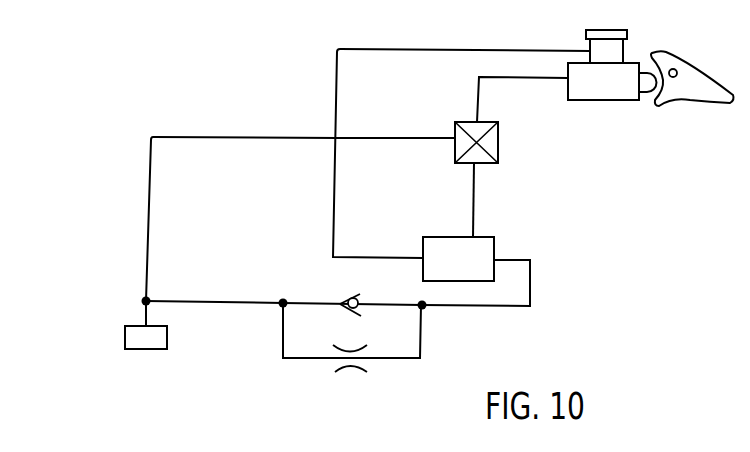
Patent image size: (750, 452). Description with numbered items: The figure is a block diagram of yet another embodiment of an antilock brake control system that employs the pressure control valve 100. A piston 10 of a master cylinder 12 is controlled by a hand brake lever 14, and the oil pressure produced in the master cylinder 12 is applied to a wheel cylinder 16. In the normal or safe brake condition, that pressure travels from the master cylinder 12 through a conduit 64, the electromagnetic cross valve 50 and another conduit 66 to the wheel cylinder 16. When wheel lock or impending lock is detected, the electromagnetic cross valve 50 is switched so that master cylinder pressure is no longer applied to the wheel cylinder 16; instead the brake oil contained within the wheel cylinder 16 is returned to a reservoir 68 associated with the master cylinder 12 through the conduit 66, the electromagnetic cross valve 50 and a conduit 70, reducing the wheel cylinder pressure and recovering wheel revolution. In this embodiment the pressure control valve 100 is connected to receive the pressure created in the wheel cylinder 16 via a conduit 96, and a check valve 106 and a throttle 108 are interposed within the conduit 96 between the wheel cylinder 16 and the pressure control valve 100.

The piston 10 is at (643, 85).
The master cylinder 12 is at (605, 95).
The hand brake lever 14 is at (697, 90).
The wheel cylinder 16 is at (133, 333).
The electromagnetic cross valve 50 is at (500, 147).
The conduit 64 is at (525, 80).
The conduit 66 is at (207, 135).
The reservoir 68 is at (610, 56).
The conduit 70 is at (335, 90).
The conduit 96 is at (227, 305).
The pressure control valve 100 is at (492, 260).
The check valve 106 is at (345, 297).
The throttle 108 is at (350, 367).